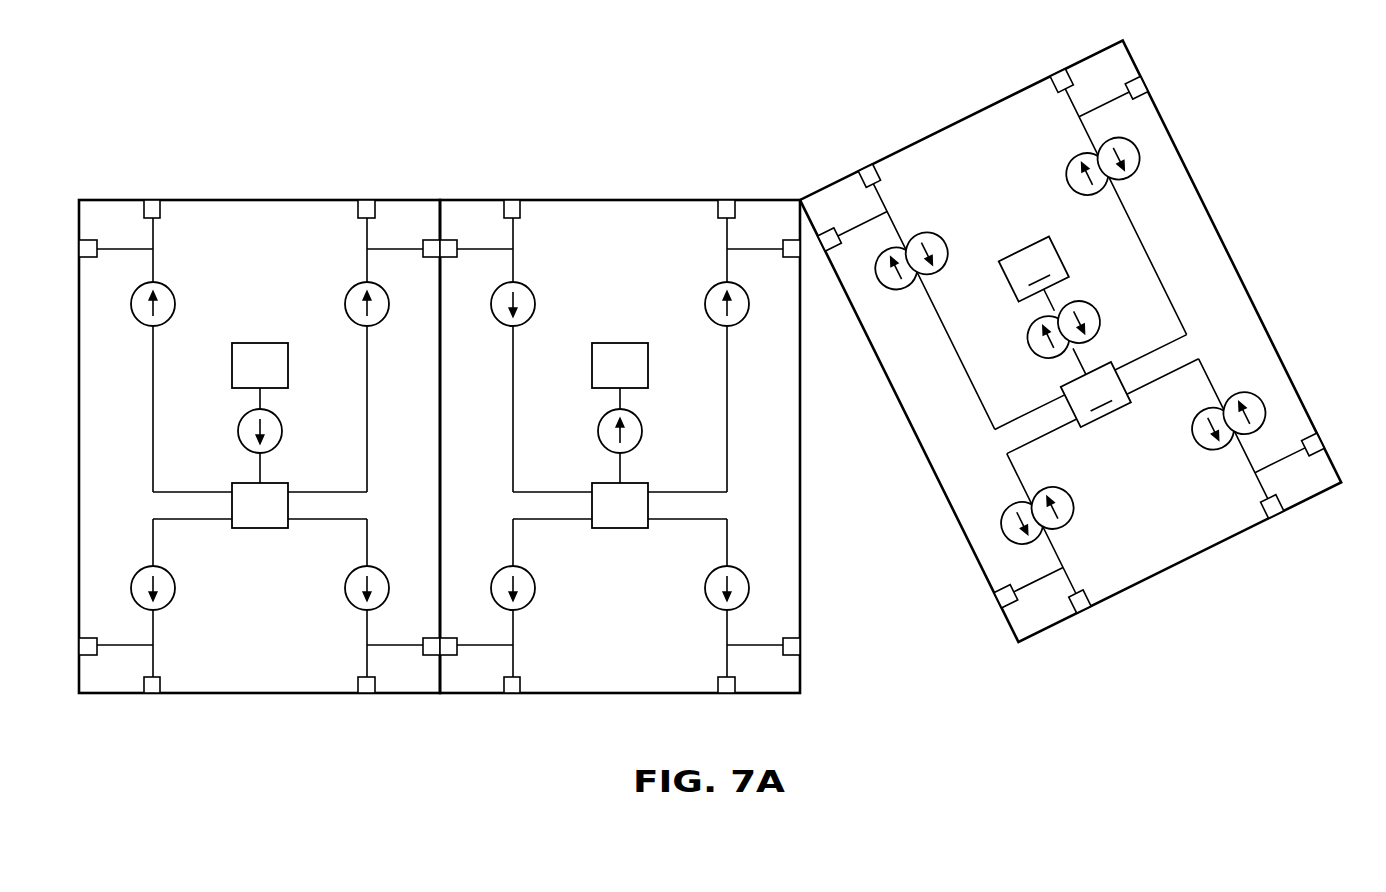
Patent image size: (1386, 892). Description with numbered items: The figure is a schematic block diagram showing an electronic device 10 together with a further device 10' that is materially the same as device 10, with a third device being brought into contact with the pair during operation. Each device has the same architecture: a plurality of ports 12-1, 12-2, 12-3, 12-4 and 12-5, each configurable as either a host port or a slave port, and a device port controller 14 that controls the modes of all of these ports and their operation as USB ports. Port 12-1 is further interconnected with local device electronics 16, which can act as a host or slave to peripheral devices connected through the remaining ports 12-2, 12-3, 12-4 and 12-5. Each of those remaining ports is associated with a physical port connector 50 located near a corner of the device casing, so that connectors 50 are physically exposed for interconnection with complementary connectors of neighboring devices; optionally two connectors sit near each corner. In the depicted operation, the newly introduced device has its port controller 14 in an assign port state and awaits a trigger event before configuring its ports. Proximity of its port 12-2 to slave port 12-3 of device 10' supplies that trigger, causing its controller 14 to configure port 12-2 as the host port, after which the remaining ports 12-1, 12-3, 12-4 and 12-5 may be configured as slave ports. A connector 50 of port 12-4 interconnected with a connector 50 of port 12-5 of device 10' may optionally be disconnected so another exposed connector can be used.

The electronic device 10 is at (259, 420).
The device 10' is at (620, 420).
The port 12-1 is at (298, 427).
The port 12-2 is at (183, 286).
The port 12-3 is at (352, 289).
The port 12-4 is at (168, 604).
The port 12-5 is at (352, 604).
The device port controller 14 is at (260, 528).
The local device electronics 16 is at (260, 343).
The physical port connector 50 is at (160, 211).